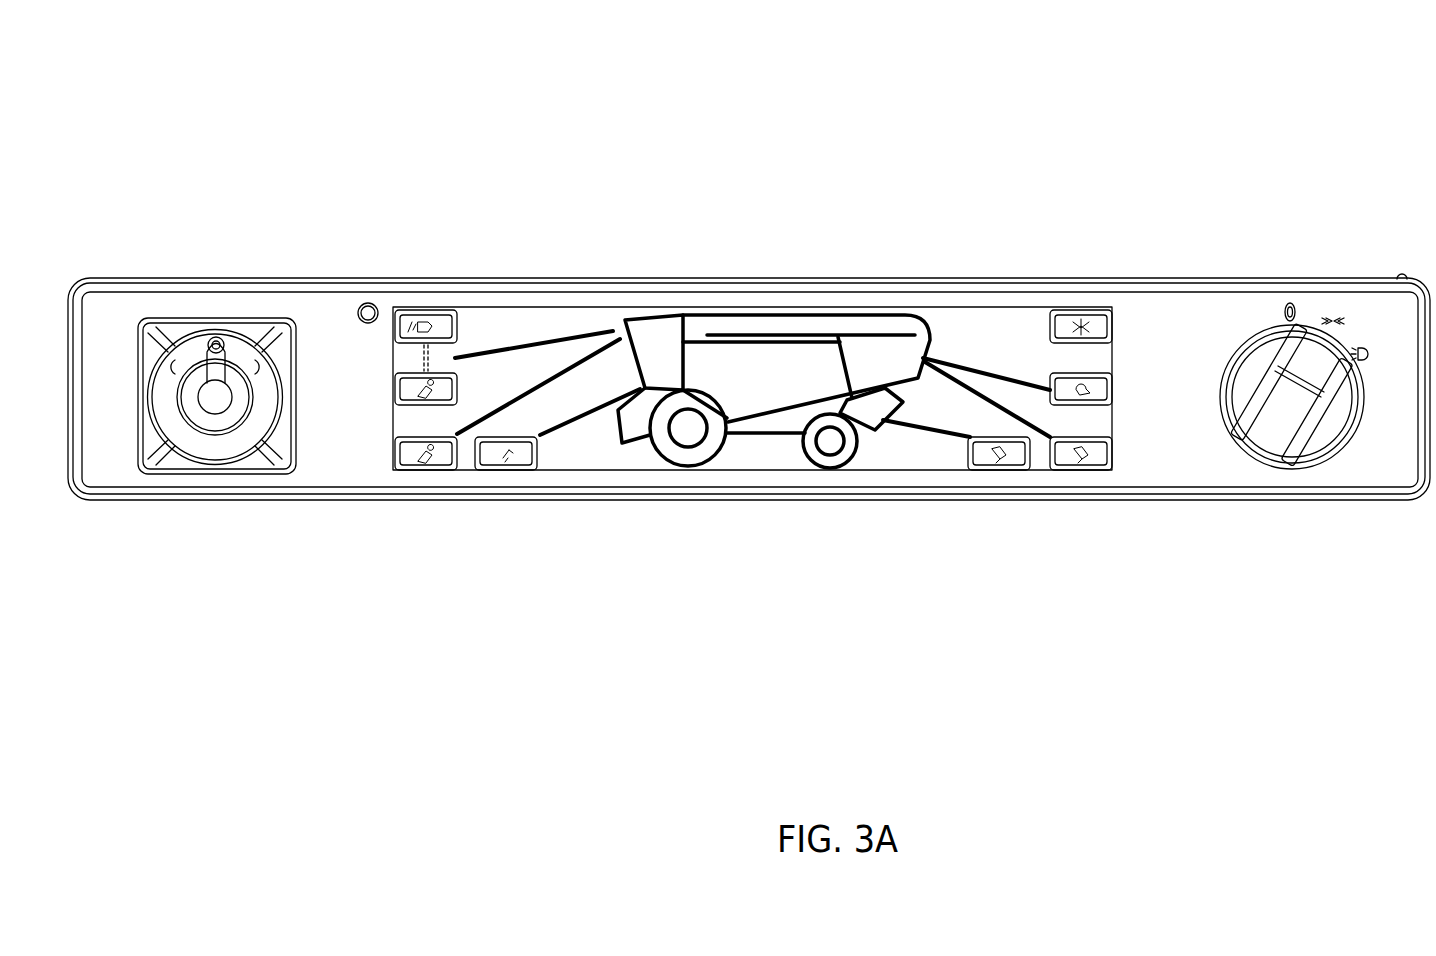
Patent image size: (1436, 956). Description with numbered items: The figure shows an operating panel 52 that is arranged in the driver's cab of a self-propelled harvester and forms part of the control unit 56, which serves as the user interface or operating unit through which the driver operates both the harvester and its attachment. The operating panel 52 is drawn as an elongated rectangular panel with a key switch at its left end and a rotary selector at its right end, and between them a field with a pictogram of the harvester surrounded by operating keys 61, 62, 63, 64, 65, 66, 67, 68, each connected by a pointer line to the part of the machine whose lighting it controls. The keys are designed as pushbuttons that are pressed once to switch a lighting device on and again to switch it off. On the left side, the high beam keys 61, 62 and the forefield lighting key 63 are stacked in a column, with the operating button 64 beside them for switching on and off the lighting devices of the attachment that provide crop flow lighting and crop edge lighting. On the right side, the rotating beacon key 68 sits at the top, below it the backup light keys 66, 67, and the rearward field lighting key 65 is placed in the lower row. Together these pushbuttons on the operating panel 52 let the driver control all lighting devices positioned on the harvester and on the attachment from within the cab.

The operating panel 52 is at (215, 125).
The control unit 56 is at (749, 388).
The operating key for high beam 61 is at (423, 308).
The operating key for high beam 62 is at (393, 388).
The operating key for forefield lighting 63 is at (412, 470).
The operating button for attachment lighting devices 64 is at (507, 470).
The operating key for rearward field lighting 65 is at (995, 470).
The operating key for backup light 66 is at (1080, 470).
The operating key for backup light 67 is at (1112, 388).
The operating key for rotating beacon 68 is at (1085, 308).